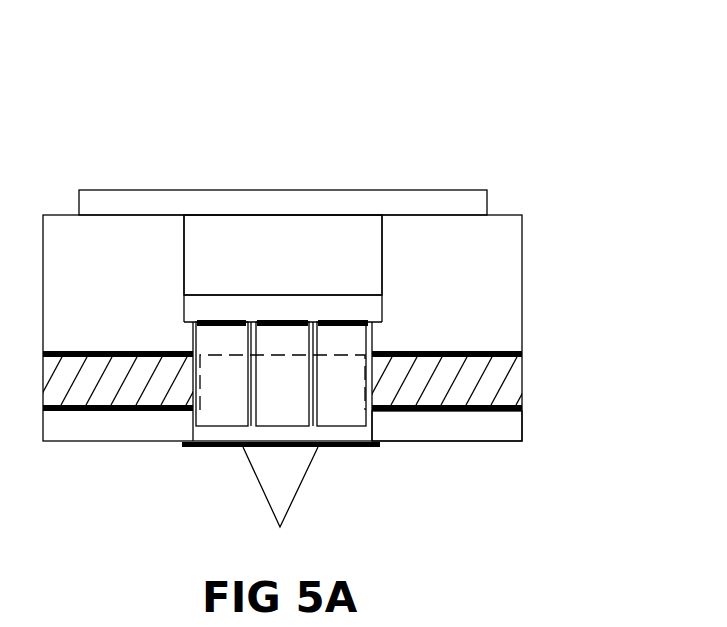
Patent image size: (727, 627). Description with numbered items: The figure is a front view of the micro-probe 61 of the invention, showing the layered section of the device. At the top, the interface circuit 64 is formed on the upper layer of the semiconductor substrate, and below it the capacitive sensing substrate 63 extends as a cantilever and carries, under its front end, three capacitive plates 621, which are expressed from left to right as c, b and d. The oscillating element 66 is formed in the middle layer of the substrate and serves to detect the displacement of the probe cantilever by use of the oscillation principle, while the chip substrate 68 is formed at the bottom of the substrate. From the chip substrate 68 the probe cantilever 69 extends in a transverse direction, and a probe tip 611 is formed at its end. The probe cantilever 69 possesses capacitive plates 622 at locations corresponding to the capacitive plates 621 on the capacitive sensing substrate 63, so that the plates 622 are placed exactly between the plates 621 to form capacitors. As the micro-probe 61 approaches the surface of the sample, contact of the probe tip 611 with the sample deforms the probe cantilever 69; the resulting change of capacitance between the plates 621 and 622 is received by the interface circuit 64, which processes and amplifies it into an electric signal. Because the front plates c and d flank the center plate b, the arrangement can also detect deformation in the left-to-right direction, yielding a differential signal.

The micro-probe 61 is at (198, 162).
The interface circuit 64 is at (273, 202).
The capacitive sensing substrate 63 is at (317, 257).
The capacitive plates 621 is at (353, 337).
The oscillating element 66 is at (475, 383).
The chip substrate 68 is at (477, 430).
The probe cantilever 69 is at (230, 447).
The probe tip 611 is at (278, 463).
The capacitive plates 622 is at (332, 433).